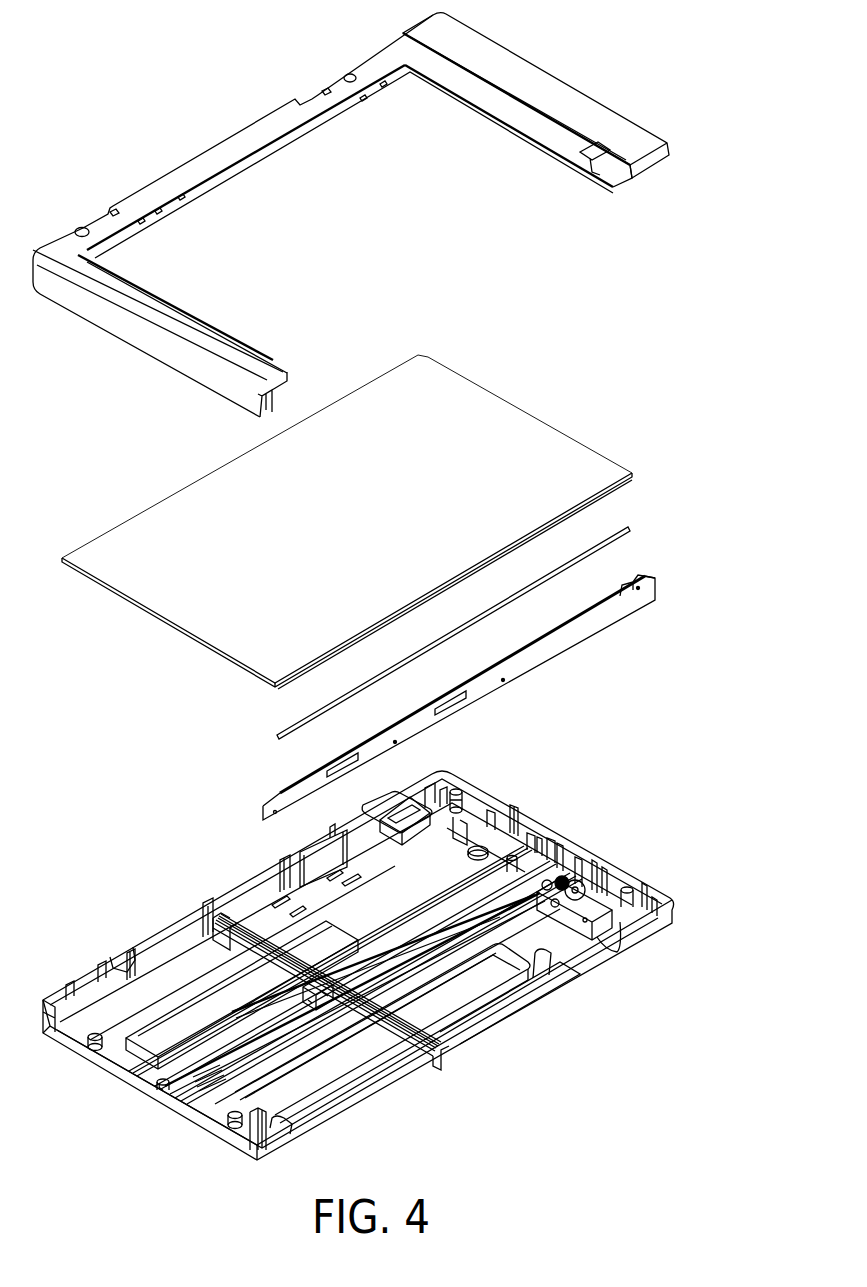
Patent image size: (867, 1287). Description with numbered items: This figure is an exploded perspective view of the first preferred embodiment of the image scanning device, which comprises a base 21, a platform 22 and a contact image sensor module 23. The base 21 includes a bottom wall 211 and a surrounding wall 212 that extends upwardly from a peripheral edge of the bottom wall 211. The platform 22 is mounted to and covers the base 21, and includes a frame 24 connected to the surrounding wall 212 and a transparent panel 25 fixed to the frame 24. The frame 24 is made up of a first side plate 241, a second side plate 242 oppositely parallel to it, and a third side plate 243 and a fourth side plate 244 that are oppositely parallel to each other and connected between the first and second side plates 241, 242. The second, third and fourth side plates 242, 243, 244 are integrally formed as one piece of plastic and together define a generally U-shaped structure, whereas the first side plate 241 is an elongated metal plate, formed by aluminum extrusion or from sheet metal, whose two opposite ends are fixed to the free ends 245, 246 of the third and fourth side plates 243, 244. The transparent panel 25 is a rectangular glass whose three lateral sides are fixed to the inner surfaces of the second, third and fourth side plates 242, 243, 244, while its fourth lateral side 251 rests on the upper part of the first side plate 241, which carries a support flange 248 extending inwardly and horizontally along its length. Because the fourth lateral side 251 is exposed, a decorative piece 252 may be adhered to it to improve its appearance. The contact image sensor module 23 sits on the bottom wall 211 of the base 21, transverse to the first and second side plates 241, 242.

The base 21 is at (636, 935).
The bottom wall 211 is at (518, 943).
The surrounding wall 212 is at (475, 1033).
The platform 22 is at (577, 78).
The contact image sensor (CIS) module 23 is at (377, 1028).
The frame 24 is at (155, 370).
The first side plate 241 is at (620, 610).
The second side plate 242 is at (247, 138).
The third side plate 243 is at (90, 312).
The fourth side plate 244 is at (502, 67).
The free end of the third side plate 245 is at (265, 395).
The free end of the fourth side plate 246 is at (648, 147).
The support flange 248 is at (615, 593).
The transparent panel 25 is at (545, 450).
The fourth lateral side 251 is at (620, 483).
The decorative piece 252 is at (627, 530).